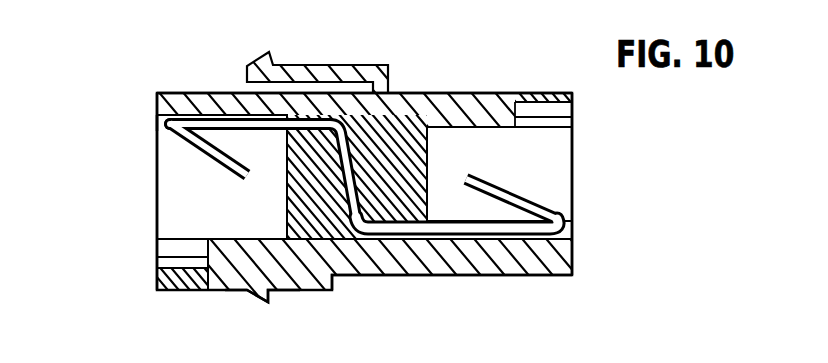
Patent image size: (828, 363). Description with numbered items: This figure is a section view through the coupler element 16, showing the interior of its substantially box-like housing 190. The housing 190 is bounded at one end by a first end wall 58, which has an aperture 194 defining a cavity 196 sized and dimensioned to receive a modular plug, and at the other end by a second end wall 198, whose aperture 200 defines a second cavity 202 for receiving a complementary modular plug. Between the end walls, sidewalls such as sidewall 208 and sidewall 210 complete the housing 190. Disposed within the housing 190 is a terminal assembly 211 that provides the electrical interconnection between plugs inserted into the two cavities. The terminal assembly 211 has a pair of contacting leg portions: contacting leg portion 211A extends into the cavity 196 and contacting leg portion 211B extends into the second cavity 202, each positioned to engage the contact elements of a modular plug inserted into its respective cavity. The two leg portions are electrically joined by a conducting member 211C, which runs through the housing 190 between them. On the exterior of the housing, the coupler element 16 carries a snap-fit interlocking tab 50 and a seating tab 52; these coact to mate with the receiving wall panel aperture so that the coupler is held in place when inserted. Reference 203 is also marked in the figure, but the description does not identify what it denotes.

The coupler element 16 is at (530, 284).
The snap-fit interlocking tab 50 is at (261, 64).
The seating tab 52 is at (260, 297).
The first end wall 58 is at (157, 103).
The housing 190 is at (420, 275).
The aperture 194 is at (157, 125).
The cavity 196 is at (173, 177).
The second end wall 198 is at (573, 257).
The aperture 200 is at (573, 218).
The second cavity 202 is at (543, 176).
The top wall 203 is at (221, 100).
The sidewall 208 is at (461, 92).
The sidewall 210 is at (541, 277).
The terminal assembly 211 is at (367, 148).
The contacting leg portion 211A is at (232, 181).
The contacting leg portion 211B is at (533, 153).
The conducting member 211C is at (304, 112).